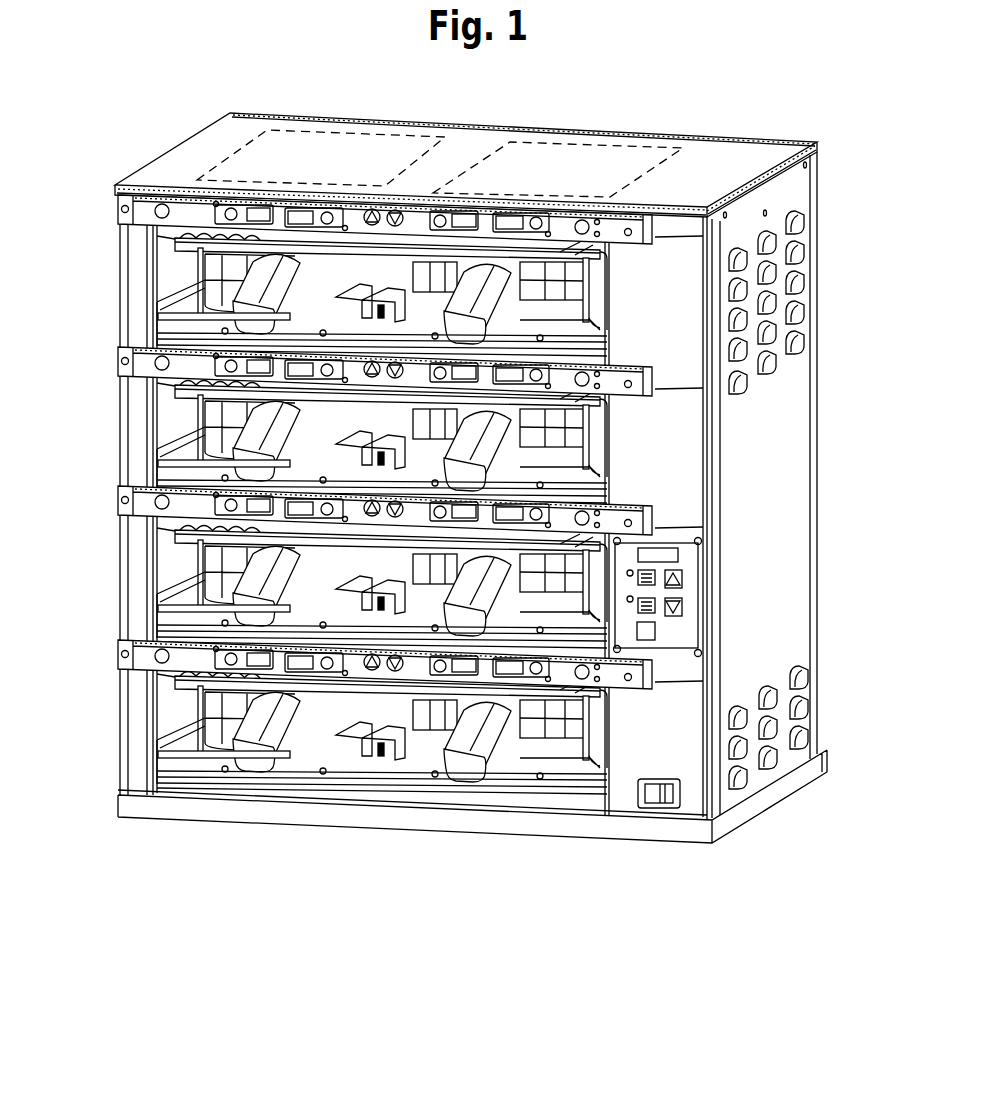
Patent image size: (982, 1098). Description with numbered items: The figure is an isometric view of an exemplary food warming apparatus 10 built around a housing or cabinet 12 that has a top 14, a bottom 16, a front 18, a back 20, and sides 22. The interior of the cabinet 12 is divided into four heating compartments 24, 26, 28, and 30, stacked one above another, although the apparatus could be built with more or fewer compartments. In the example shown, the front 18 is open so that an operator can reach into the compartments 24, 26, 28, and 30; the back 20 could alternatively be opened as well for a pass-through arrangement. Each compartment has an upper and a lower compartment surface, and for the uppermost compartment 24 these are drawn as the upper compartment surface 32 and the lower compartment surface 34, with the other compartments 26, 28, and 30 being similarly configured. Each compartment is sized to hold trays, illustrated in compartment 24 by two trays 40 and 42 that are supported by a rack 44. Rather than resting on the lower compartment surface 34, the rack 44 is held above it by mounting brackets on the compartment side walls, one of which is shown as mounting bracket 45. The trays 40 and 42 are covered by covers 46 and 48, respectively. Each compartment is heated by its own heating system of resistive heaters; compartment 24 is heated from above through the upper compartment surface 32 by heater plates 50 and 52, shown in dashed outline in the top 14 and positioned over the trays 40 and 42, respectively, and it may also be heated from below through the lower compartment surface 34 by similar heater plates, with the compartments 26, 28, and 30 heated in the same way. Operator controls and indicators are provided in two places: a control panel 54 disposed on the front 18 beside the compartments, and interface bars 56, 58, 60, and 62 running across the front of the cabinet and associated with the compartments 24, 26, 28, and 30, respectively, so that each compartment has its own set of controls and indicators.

The food warming apparatus 10 is at (468, 529).
The housing or cabinet 12 is at (501, 478).
The top 14 is at (466, 151).
The bottom 16 is at (455, 832).
The front 18 is at (504, 516).
The back 20 is at (795, 486).
The sides 22 is at (735, 471).
The heating compartment 24 is at (362, 285).
The heating compartment 26 is at (145, 447).
The heating compartment 28 is at (145, 565).
The heating compartment 30 is at (145, 706).
The upper compartment surface 32 is at (160, 232).
The lower compartment surface 34 is at (142, 333).
The tray 40 is at (230, 288).
The tray 42 is at (605, 290).
The rack 44 is at (593, 355).
The mounting bracket 45 is at (170, 303).
The cover 46 is at (175, 243).
The cover 48 is at (608, 255).
The heater plate 50 is at (380, 133).
The heater plate 52 is at (595, 145).
The control panel 54 is at (700, 603).
The interface bar 56 is at (118, 198).
The interface bar 58 is at (118, 366).
The interface bar 60 is at (118, 495).
The interface bar 62 is at (118, 648).